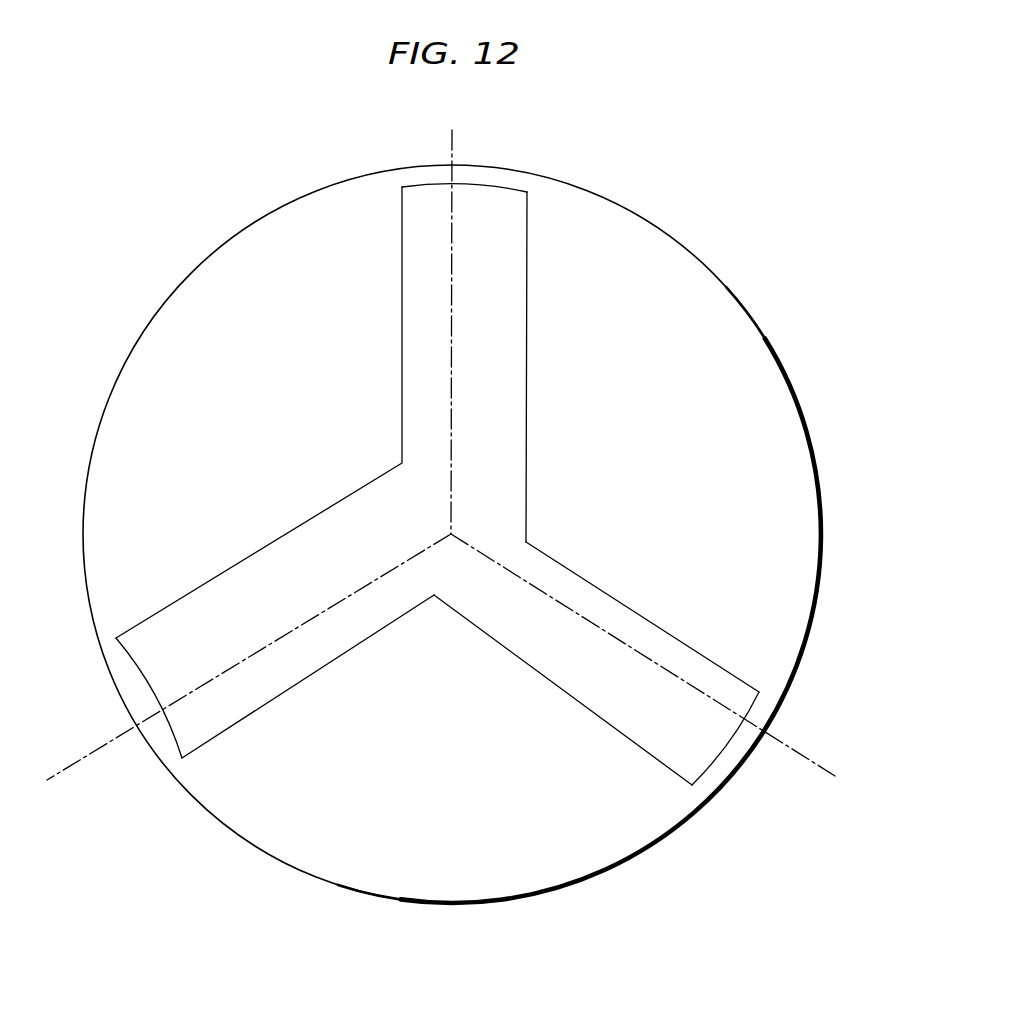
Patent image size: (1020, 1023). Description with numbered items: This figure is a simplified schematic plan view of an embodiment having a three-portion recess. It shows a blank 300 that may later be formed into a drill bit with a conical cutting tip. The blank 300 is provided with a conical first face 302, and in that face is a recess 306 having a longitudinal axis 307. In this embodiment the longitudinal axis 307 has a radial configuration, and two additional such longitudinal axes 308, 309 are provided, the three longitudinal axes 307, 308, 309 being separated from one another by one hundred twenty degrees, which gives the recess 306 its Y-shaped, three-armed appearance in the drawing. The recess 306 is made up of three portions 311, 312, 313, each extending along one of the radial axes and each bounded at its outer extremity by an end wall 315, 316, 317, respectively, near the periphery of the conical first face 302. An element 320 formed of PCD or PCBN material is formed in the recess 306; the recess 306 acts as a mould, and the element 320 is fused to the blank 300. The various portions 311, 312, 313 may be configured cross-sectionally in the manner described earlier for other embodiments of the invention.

The blank 300 is at (778, 528).
The conical first face 302 is at (732, 343).
The recess 306 is at (418, 208).
The longitudinal axis 307 is at (453, 148).
The longitudinal axis 308 is at (832, 775).
The longitudinal axis 309 is at (70, 767).
The portion 311 is at (422, 188).
The portion 312 is at (697, 752).
The portion 313 is at (147, 650).
The end wall 315 is at (500, 185).
The end wall 316 is at (745, 710).
The end wall 317 is at (158, 732).
The element 320 is at (513, 220).